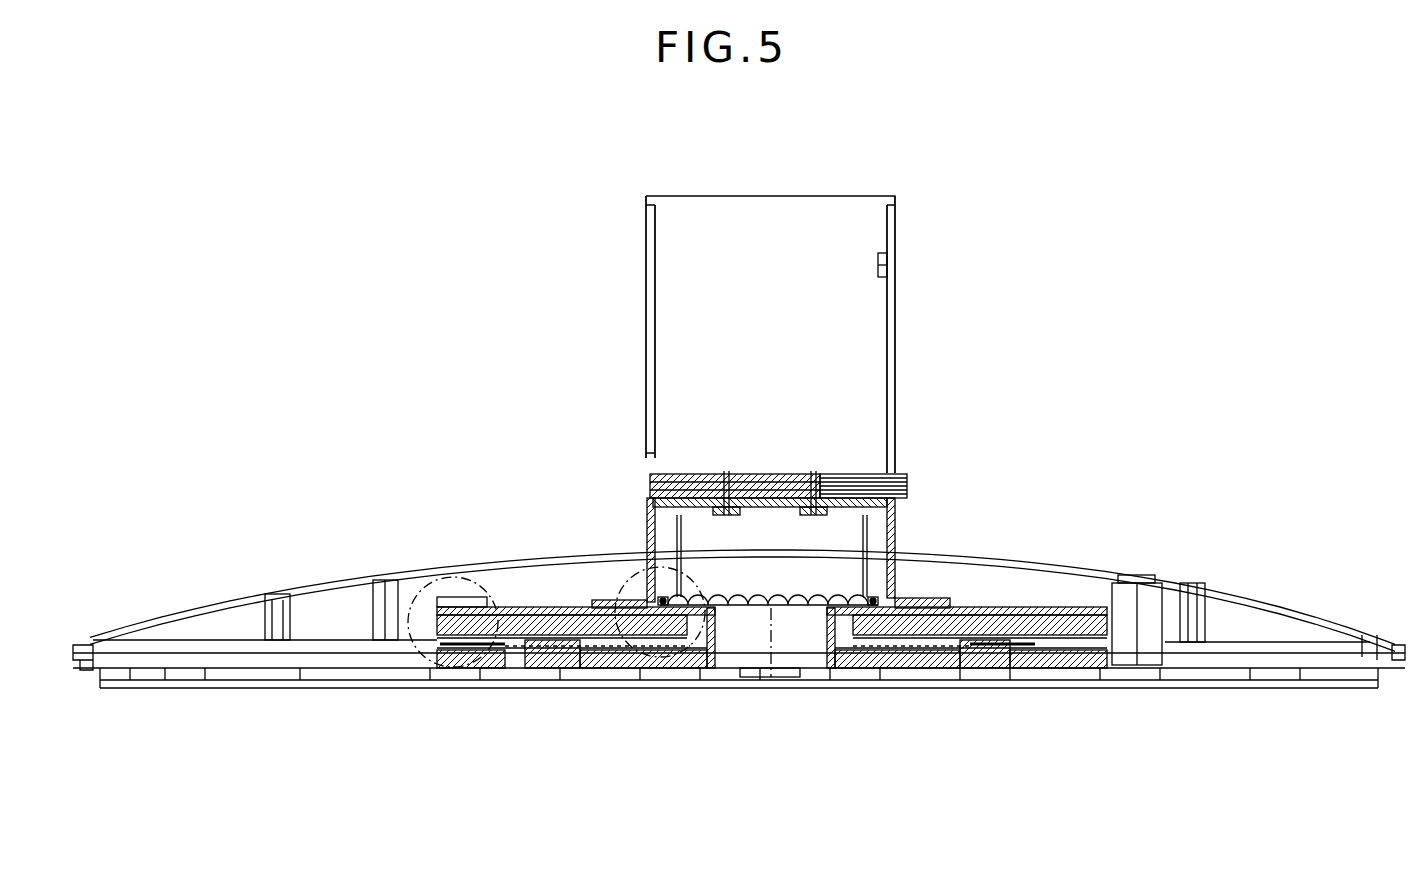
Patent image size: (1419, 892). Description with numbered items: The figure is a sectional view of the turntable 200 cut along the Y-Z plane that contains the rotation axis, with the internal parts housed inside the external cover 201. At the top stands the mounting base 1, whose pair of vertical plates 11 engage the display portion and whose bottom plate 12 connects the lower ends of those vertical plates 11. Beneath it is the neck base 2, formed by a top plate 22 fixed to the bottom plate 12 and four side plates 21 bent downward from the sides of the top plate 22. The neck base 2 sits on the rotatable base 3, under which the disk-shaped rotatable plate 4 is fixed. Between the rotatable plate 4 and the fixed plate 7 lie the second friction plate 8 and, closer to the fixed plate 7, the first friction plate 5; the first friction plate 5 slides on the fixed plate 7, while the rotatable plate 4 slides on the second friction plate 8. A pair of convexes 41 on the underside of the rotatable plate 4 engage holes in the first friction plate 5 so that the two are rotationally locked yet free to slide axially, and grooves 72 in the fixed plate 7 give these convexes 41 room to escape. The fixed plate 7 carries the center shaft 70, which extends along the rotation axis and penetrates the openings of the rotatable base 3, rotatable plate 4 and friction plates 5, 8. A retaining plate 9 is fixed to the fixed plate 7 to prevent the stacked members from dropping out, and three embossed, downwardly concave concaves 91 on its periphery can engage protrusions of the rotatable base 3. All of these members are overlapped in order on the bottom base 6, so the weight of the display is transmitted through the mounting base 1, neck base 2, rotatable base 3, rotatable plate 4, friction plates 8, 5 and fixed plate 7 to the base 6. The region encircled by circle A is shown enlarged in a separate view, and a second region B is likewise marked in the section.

The mounting base 1 is at (957, 274).
The vertical plates 11 is at (648, 238).
The bottom plate 12 is at (773, 474).
The neck base 2 is at (926, 473).
The side plates 21 is at (647, 522).
The top plate 22 is at (773, 508).
The concaves 91 is at (796, 600).
The circle A is at (421, 590).
The region B is at (691, 580).
The second friction plate 8 is at (440, 597).
The rotatable base 3 is at (515, 607).
The rotatable plate 4 is at (558, 607).
The first friction plate 5 is at (437, 662).
The convexes 41 is at (536, 668).
The grooves 72 is at (583, 668).
The fixed plate 7 is at (664, 668).
The retaining plate 9 is at (749, 608).
The center shaft 70 is at (830, 625).
The bottom base 6 is at (957, 688).
The external cover 201 is at (1225, 593).
The turntable 200 is at (333, 779).